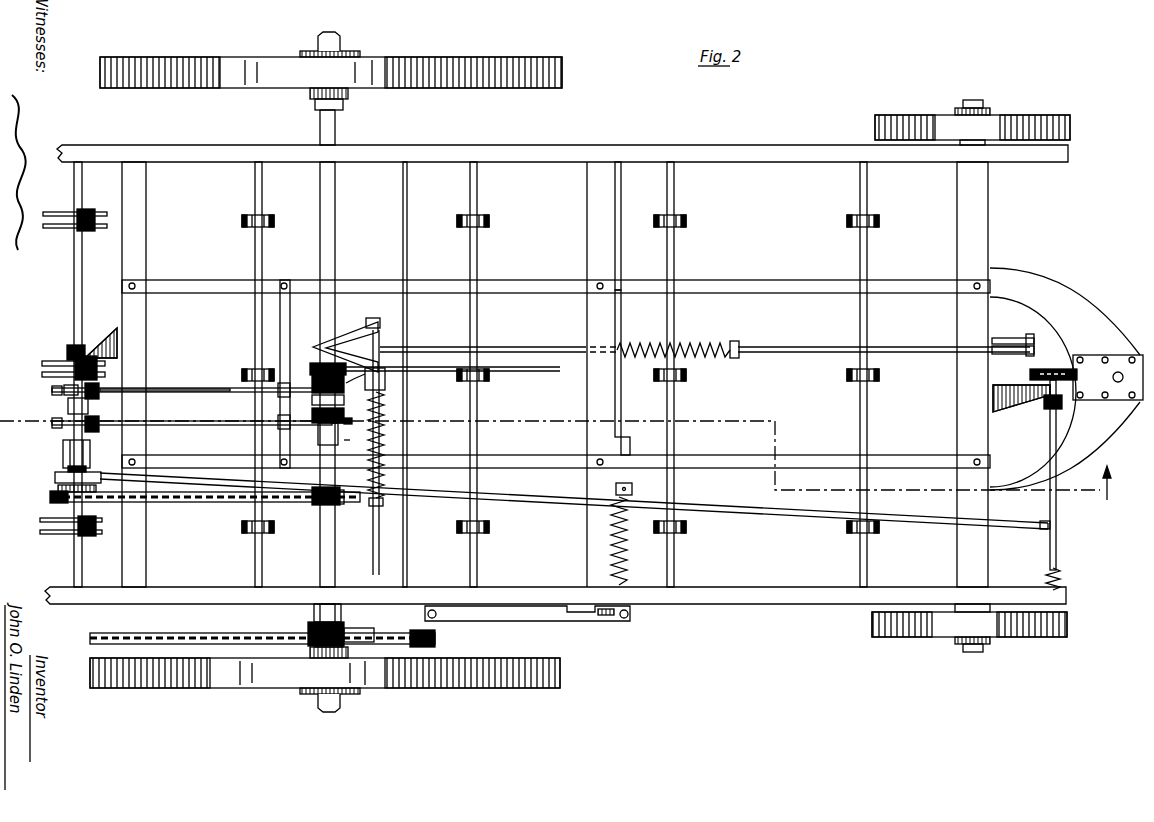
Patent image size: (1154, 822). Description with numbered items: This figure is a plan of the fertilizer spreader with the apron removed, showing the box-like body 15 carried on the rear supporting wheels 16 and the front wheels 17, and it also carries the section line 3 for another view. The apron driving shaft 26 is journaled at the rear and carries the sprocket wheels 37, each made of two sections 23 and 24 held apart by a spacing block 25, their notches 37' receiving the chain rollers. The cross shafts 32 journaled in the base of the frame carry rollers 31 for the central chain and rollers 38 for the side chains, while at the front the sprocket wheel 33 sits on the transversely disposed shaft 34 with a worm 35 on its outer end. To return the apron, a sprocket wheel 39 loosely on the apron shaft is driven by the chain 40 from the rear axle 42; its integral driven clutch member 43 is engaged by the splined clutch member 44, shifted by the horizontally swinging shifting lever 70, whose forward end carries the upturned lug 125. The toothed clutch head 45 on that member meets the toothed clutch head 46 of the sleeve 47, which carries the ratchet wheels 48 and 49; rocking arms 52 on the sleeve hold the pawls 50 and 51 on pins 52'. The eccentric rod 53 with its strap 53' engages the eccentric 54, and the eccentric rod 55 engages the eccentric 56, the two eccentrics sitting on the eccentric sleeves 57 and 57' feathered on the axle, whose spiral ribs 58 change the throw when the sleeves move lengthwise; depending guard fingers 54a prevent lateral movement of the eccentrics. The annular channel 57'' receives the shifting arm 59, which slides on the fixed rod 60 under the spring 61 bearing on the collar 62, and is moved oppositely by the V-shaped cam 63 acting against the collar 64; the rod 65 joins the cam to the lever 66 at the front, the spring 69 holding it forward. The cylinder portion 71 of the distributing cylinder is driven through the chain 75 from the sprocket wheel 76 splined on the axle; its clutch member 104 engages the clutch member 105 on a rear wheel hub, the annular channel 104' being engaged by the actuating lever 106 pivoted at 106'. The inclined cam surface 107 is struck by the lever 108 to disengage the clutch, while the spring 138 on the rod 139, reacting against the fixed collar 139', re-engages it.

The section line 3 is at (1094, 490).
The box-like body 15 is at (736, 606).
The rear supporting wheels 16 is at (545, 90).
The front wheels 17 is at (876, 128).
The sprocket wheel section 23 is at (60, 361).
The sprocket wheel section 24 is at (64, 389).
The spacing block 25 is at (42, 373).
The apron driving shaft 26 is at (74, 323).
The rollers 31 is at (490, 375).
The cross shafts 32 is at (255, 322).
The sprocket wheel 33 is at (1048, 369).
The transversely disposed shaft 34 is at (1057, 538).
The worm 35 is at (1062, 579).
The sprocket wheels 37 is at (123, 383).
The notches 37' is at (57, 381).
The rollers 38 is at (274, 226).
The sprocket wheel 39 is at (56, 503).
The chain 40 is at (188, 503).
The rear axle 42 is at (320, 506).
The driven clutch member 43 is at (58, 489).
The clutch member 44 is at (55, 478).
The toothed clutch head 45 is at (68, 468).
The toothed clutch head 46 is at (63, 451).
The sleeve 47 is at (68, 408).
The ratchet wheel 48 is at (52, 425).
The ratchet wheel 49 is at (52, 393).
The pawl 50 is at (92, 426).
The pawl 51 is at (88, 392).
The rocking arms 52 is at (192, 401).
The pins 52' is at (165, 419).
The eccentric rod 53 is at (192, 435).
The strap 53' is at (397, 436).
The eccentric 54 is at (318, 437).
The guard fingers 54a is at (278, 392).
The eccentric rod 55 is at (196, 379).
The eccentric 56 is at (312, 382).
The eccentric sleeve 57 is at (388, 440).
The eccentric sleeve 57' is at (401, 414).
The annular channel 57'' is at (319, 346).
The spiral ribs 58 is at (312, 402).
The shifting arm 59 is at (348, 385).
The fixed rod 60 is at (373, 566).
The spring 61 is at (386, 404).
The collar 62 is at (384, 503).
The V-shaped cam 63 is at (346, 342).
The collar 64 is at (382, 322).
The rod 65 is at (532, 346).
The lever 66 is at (1018, 345).
The spring 69 is at (735, 358).
The shifting lever 70 is at (765, 510).
The cylinder portion 71 is at (340, 504).
The chain 75 is at (190, 636).
The sprocket wheel 76 is at (432, 646).
The clutch member 104 is at (304, 642).
The annular channel 104' is at (300, 614).
The clutch member 105 is at (350, 645).
The actuating lever 106 is at (527, 624).
The pivot 106' is at (461, 625).
The inclined cam surface 107 is at (580, 612).
The lever 108 is at (606, 615).
The upturned lug 125 is at (1050, 525).
The spring 138 is at (627, 568).
The rod 139 is at (642, 372).
The fixed collar 139' is at (669, 328).